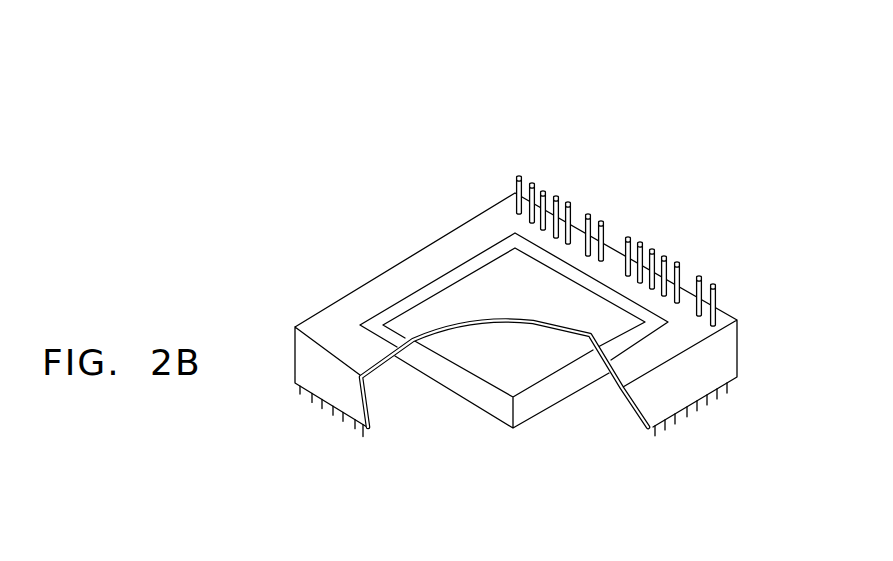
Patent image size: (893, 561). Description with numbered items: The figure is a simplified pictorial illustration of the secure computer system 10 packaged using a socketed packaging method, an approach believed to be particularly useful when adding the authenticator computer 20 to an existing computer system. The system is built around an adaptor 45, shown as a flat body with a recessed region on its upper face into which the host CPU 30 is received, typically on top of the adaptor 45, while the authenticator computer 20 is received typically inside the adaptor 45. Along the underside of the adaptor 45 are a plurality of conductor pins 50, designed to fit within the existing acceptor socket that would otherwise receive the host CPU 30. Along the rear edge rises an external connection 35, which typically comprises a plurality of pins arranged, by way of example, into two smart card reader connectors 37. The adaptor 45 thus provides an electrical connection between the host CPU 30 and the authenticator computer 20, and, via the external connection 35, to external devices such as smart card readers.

The secure computer system 10 is at (535, 272).
The authenticator computer 20 is at (545, 395).
The host CPU 30 is at (472, 297).
The external connection 35 is at (522, 176).
The smart card reader connectors 37 is at (674, 211).
The adaptor 45 is at (310, 327).
The conductor pins 50 is at (358, 427).